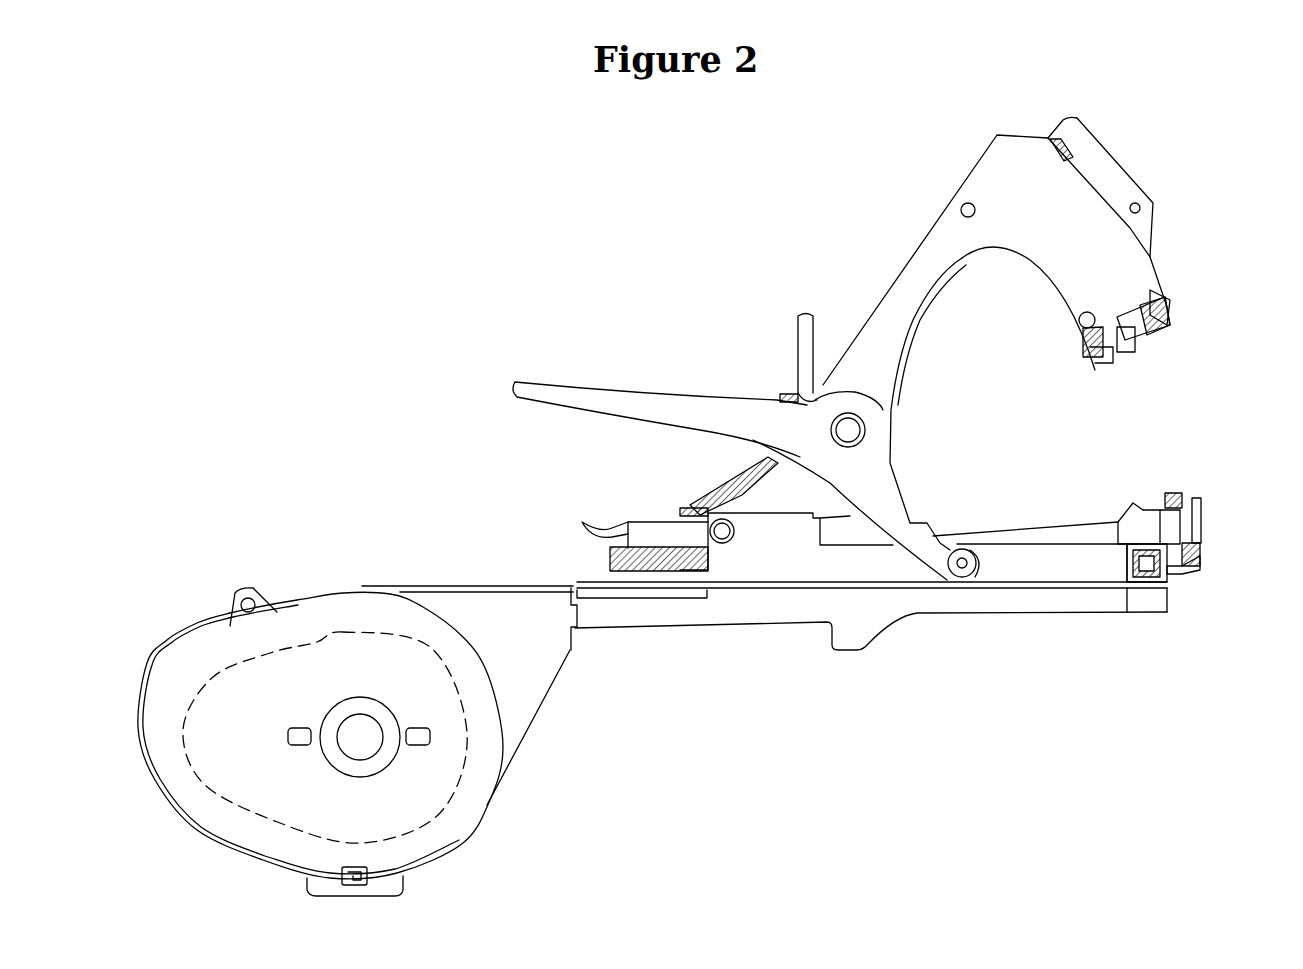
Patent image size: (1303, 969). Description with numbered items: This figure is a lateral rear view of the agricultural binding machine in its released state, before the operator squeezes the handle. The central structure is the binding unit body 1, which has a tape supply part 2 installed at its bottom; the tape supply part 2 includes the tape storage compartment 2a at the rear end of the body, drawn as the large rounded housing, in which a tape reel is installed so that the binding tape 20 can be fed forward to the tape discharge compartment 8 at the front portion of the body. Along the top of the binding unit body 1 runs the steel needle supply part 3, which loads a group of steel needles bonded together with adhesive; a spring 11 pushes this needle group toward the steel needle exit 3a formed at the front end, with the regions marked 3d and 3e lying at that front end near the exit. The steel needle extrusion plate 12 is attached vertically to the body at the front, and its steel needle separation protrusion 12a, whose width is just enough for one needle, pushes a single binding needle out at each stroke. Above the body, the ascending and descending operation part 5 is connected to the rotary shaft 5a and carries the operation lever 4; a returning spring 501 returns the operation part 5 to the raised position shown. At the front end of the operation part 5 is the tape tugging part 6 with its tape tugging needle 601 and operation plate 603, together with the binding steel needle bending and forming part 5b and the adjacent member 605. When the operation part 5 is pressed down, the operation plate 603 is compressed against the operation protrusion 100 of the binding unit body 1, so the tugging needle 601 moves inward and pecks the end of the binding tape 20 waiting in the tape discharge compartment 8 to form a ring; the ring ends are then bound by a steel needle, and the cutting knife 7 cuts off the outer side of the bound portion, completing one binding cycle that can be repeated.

The binding unit body 1 is at (1000, 568).
The tape supply part 2 is at (1070, 600).
The tape storage compartment 2a is at (470, 800).
The steel needle supply part 3 is at (1040, 535).
The steel needle exit 3a is at (1113, 515).
The guide bar step 3d is at (1130, 510).
The guide bar end 3e is at (1140, 515).
The operation lever 4 is at (652, 398).
The ascending and descending operation part 5 is at (908, 288).
The rotary shaft 5a is at (730, 545).
The binding steel needle bending and forming part 5b is at (1097, 357).
The tape tugging part 6 is at (1117, 247).
The cutting knife 7 is at (1195, 558).
The tape discharge compartment 8 is at (1200, 548).
The spring 11 is at (620, 560).
The steel needle extrusion plate 12 is at (1150, 590).
The steel needle separation protrusion 12a is at (1140, 565).
The binding tape 20 is at (1180, 495).
The operation protrusion 100 is at (1200, 500).
The returning spring 501 is at (720, 497).
The tape tugging needle 601 is at (1177, 313).
The operation plate 603 is at (1160, 340).
The staple guide 605 is at (1127, 355).